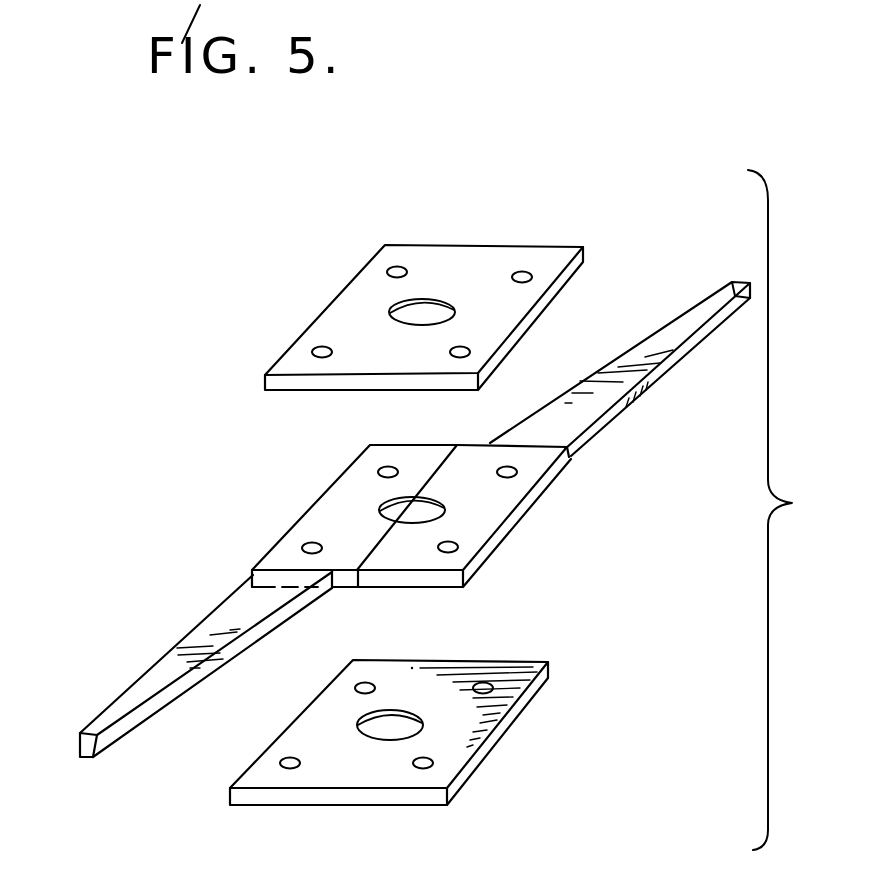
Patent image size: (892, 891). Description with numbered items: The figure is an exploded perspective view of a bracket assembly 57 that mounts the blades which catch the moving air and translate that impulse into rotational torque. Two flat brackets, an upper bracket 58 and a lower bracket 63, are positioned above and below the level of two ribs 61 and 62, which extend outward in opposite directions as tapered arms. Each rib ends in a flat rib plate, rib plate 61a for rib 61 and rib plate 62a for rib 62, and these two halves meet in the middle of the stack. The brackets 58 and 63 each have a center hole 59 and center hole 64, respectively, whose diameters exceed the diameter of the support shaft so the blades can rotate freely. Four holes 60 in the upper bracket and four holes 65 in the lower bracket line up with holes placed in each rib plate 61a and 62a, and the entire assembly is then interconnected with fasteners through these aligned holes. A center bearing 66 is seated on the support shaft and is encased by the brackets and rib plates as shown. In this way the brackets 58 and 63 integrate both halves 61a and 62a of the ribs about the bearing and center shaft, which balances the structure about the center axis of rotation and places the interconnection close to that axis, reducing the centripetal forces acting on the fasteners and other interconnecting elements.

The bracket assembly 57 is at (145, 370).
The bracket 58 is at (438, 260).
The center hole 59 is at (420, 303).
The holes 60 is at (392, 272).
The rib 61 is at (142, 670).
The rib plate 61a is at (332, 502).
The rib 62 is at (677, 323).
The rib plate 62a is at (497, 510).
The bracket 63 is at (393, 735).
The center hole 64 is at (372, 718).
The holes 65 is at (278, 763).
The center bearing 66 is at (387, 502).